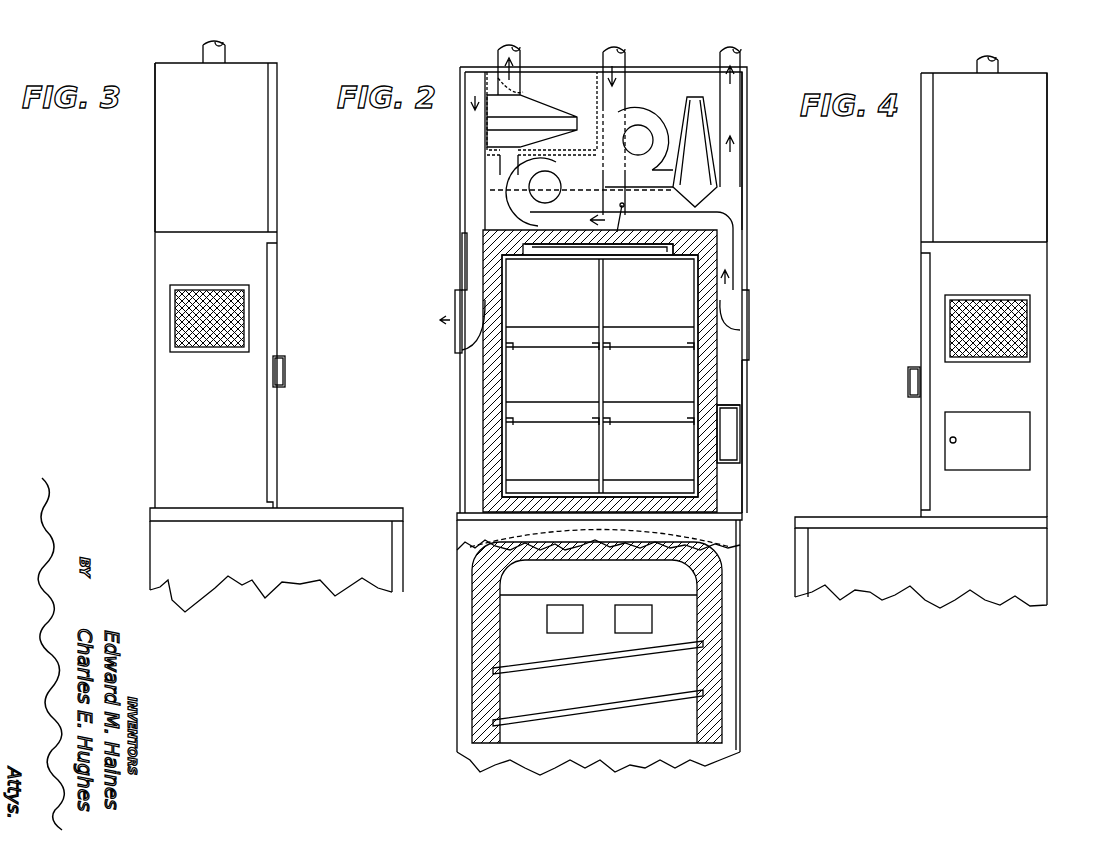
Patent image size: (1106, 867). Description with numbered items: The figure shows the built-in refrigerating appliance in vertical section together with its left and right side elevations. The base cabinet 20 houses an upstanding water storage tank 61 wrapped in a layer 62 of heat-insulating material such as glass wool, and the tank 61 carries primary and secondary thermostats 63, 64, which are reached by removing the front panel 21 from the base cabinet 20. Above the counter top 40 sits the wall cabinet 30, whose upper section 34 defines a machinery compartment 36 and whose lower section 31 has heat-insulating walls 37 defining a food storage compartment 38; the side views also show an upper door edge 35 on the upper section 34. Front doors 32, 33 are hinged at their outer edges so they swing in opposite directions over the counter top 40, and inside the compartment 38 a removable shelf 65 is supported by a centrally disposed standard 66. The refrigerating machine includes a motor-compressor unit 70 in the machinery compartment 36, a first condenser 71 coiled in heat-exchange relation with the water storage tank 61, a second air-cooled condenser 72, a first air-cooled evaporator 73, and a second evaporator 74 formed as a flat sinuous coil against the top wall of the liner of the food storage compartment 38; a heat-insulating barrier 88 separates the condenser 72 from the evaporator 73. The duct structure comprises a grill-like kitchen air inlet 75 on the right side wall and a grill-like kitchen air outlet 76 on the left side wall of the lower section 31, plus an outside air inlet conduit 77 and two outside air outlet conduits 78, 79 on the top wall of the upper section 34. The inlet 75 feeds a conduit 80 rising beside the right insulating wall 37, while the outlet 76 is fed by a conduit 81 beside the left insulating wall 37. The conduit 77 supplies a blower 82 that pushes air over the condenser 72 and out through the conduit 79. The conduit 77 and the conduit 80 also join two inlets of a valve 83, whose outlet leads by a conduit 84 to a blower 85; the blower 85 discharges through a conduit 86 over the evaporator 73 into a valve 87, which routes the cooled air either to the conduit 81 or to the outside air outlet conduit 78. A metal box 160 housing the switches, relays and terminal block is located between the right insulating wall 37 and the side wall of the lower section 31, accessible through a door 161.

In FIG. 2, the base cabinet 20 is at (752, 714).
In FIG. 3, the base cabinet 20 is at (297, 556).
In FIG. 4, the base cabinet 20 is at (925, 566).
In FIG. 2, the front panel 21 is at (740, 534).
In FIG. 3, the front panel 21 is at (404, 575).
In FIG. 4, the front panel 21 is at (794, 580).
In FIG. 2, the wall cabinet 30 is at (752, 258).
In FIG. 3, the wall cabinet 30 is at (288, 240).
In FIG. 4, the wall cabinet 30 is at (907, 244).
In FIG. 2, the lower section 31 is at (746, 386).
In FIG. 3, the lower section 31 is at (150, 402).
In FIG. 4, the lower section 31 is at (1047, 408).
In FIG. 3, the front door 32 is at (278, 403).
In FIG. 4, the front door 33 is at (915, 412).
In FIG. 2, the upper section 34 is at (748, 188).
In FIG. 3, the upper section 34 is at (150, 157).
In FIG. 4, the upper section 34 is at (1048, 172).
In FIG. 3, the upper door edge 35 is at (278, 162).
In FIG. 4, the upper door edge 35 is at (922, 166).
In FIG. 2, the machinery compartment 36 is at (680, 94).
In FIG. 2, the heat-insulating walls 37 is at (495, 378).
In FIG. 2, the food storage compartment 38 is at (563, 300).
In FIG. 2, the counter top 40 is at (463, 526).
In FIG. 3, the counter top 40 is at (353, 509).
In FIG. 4, the counter top 40 is at (876, 517).
In FIG. 2, the water storage tank 61 is at (618, 694).
In FIG. 2, the layer of heat-insulating material 62 is at (708, 665).
In FIG. 2, the primary thermostat 63 is at (546, 622).
In FIG. 2, the secondary thermostat 64 is at (635, 620).
In FIG. 2, the removable shelf 65 is at (657, 397).
In FIG. 2, the standard 66 is at (619, 376).
In FIG. 2, the refrigerant motor-compressor unit 70 is at (586, 108).
In FIG. 2, the first condenser 71 is at (540, 712).
In FIG. 2, the second air-cooled refrigerant condenser 72 is at (712, 190).
In FIG. 2, the first air-cooled refrigerant evaporator 73 is at (515, 110).
In FIG. 2, the second refrigerant evaporator 74 is at (652, 255).
In FIG. 2, the kitchen air inlet 75 is at (751, 320).
In FIG. 4, the kitchen air inlet 75 is at (988, 310).
In FIG. 2, the kitchen air outlet 76 is at (455, 300).
In FIG. 3, the kitchen air outlet 76 is at (222, 292).
In FIG. 2, the outside air inlet conduit 77 is at (626, 53).
In FIG. 2, the outside air outlet conduit 78 is at (521, 52).
In FIG. 3, the outside air outlet conduit 78 is at (226, 52).
In FIG. 2, the outside air outlet conduit 79 is at (742, 60).
In FIG. 4, the outside air outlet conduit 79 is at (999, 66).
In FIG. 2, the conduit 80 is at (735, 244).
In FIG. 2, the conduit 81 is at (468, 248).
In FIG. 2, the blower 82 is at (630, 150).
In FIG. 2, the valve 83 is at (624, 214).
In FIG. 2, the conduit 84 is at (533, 180).
In FIG. 2, the blower 85 is at (586, 189).
In FIG. 2, the conduit 86 is at (500, 155).
In FIG. 2, the valve 87 is at (497, 82).
In FIG. 2, the heat-insulating barrier 88 is at (547, 150).
In FIG. 2, the box 160 is at (740, 440).
In FIG. 2, the door 161 is at (742, 416).
In FIG. 4, the door 161 is at (995, 428).